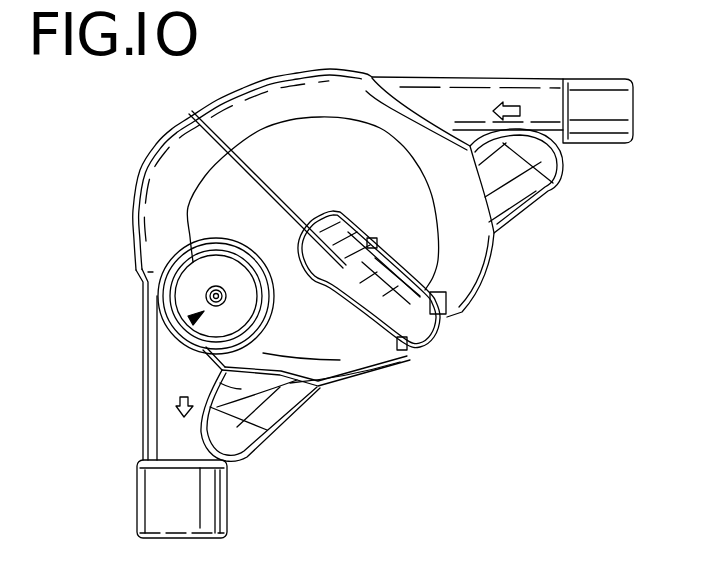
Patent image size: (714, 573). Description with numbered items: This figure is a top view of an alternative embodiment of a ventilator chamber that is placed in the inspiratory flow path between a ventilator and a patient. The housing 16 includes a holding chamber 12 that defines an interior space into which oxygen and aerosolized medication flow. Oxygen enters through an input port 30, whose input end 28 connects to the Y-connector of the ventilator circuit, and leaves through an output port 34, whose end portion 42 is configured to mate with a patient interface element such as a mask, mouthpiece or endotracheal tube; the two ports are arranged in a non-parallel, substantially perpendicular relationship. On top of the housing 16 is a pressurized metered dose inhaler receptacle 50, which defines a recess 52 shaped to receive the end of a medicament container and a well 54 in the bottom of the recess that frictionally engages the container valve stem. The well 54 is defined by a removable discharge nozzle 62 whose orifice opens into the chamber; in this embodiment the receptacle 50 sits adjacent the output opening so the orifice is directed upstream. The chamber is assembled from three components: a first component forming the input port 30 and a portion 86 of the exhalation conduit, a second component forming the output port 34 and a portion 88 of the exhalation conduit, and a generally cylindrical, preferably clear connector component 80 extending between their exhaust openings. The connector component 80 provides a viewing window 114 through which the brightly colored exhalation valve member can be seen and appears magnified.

The holding chamber 12 is at (336, 181).
The housing 16 is at (248, 100).
The input end 28 is at (599, 133).
The input port 30 is at (596, 92).
The output port 34 is at (203, 525).
The end portion 42 is at (228, 529).
The MDI receptacle 50 is at (158, 300).
The recess 52 is at (192, 320).
The well 54 is at (206, 297).
The discharge nozzle 62 is at (240, 283).
The connector component 80 is at (420, 313).
The portion of the exhalation conduit 86 is at (504, 208).
The portion of the exhalation conduit 88 is at (267, 423).
The viewing window 114 is at (446, 318).